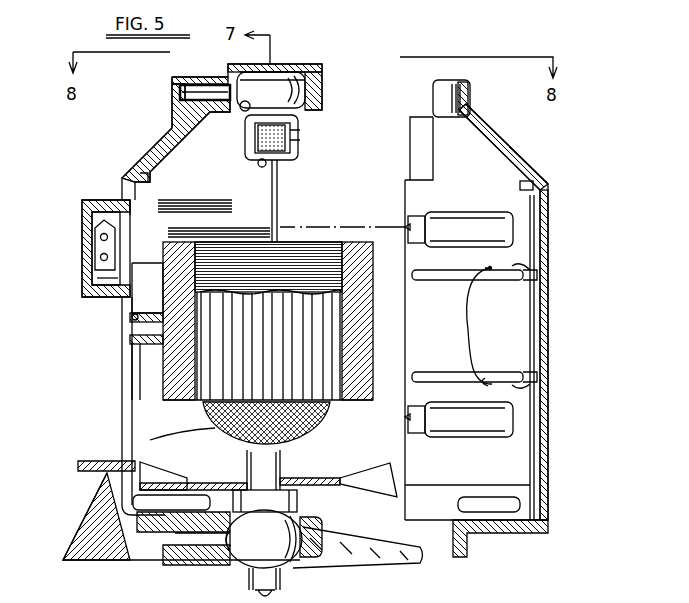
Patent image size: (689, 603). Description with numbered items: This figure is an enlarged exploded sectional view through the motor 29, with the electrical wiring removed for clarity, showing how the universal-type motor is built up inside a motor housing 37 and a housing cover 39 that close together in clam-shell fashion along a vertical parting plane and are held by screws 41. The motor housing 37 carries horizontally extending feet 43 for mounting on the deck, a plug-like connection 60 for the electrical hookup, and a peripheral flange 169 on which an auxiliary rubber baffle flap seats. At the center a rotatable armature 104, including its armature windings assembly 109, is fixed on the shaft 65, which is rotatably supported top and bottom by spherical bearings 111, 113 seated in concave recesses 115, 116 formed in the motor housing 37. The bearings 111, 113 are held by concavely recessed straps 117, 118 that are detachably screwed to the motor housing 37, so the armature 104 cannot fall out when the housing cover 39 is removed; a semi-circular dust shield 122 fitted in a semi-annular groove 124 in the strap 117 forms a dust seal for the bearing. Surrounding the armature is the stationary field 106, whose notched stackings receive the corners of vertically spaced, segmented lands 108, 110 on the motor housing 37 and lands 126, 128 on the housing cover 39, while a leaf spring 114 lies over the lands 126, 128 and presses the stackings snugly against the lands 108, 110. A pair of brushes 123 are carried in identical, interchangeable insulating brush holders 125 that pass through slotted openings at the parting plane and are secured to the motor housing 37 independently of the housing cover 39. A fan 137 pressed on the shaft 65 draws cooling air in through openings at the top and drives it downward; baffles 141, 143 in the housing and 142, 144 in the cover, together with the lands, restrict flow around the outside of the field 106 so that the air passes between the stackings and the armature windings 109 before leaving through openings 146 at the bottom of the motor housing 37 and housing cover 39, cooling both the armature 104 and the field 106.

The motor 29 is at (99, 192).
The motor housing 37 is at (124, 368).
The housing cover 39 is at (545, 338).
The screws 41 is at (404, 225).
The feet 43 is at (387, 555).
The plug-like connection 60 is at (96, 250).
The shaft 65 is at (280, 572).
The armature 104 is at (208, 440).
The field 106 is at (390, 336).
The segmented lands 108 is at (152, 268).
The armature windings assembly 109 is at (318, 426).
The segmented lands 110 is at (141, 352).
The spherical bearing 111 is at (318, 77).
The spherical bearing 113 is at (283, 537).
The leaf spring 114 is at (468, 342).
The concave recess 115 is at (244, 110).
The concave recess 116 is at (236, 565).
The strap 117 is at (298, 92).
The strap 118 is at (314, 525).
The semi-circular dust shield 122 is at (283, 66).
The brushes 123 is at (292, 132).
The semi-annular groove 124 is at (310, 70).
The brush holders 125 is at (297, 150).
The segmented lands 126 is at (525, 268).
The segmented lands 128 is at (525, 390).
The fan 137 is at (393, 486).
The baffle 141 is at (133, 326).
The baffle 142 is at (528, 282).
The baffle 143 is at (132, 346).
The baffle 144 is at (528, 372).
The openings 146 is at (520, 505).
The peripheral flange 169 is at (108, 462).